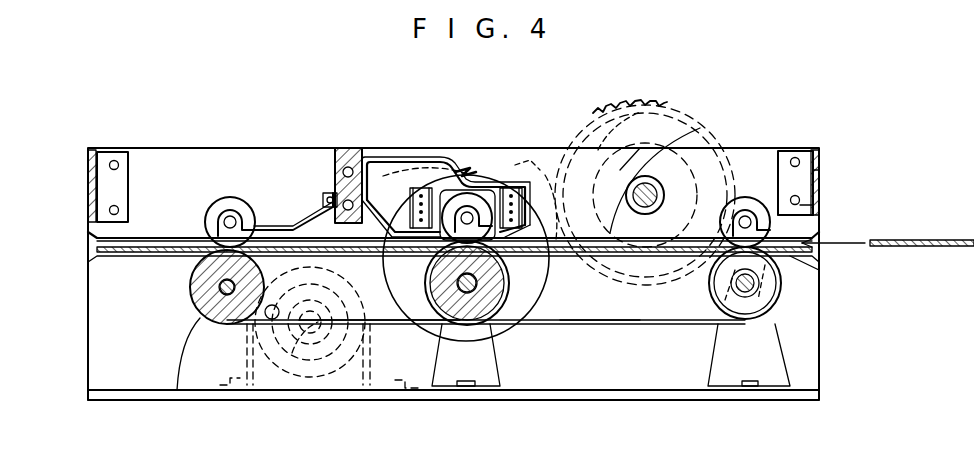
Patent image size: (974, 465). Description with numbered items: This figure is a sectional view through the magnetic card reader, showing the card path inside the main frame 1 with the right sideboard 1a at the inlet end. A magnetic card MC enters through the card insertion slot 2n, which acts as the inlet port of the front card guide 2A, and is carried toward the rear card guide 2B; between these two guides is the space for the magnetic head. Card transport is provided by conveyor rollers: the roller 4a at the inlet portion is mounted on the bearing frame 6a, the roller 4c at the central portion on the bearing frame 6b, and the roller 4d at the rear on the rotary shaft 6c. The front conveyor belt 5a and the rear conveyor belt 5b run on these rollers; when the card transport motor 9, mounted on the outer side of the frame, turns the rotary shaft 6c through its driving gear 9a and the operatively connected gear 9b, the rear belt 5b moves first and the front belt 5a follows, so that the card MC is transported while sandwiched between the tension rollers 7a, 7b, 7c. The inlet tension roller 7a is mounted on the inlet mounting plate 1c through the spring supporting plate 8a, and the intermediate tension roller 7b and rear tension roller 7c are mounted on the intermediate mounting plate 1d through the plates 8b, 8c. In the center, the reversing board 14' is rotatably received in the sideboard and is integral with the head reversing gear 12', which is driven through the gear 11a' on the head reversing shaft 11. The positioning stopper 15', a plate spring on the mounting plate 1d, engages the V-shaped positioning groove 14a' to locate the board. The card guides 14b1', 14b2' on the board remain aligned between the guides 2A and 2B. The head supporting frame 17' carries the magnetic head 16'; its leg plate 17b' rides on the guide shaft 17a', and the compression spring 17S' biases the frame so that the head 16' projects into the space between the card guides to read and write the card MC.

The main frame 1 is at (707, 398).
The right sideboard 1a is at (780, 160).
The inlet mounting plate 1c is at (820, 168).
The intermediate mounting plate 1d is at (302, 190).
The front card guide 2A is at (660, 162).
The rear card guide 2B is at (165, 237).
The card insertion slot 2n is at (817, 250).
The conveyor roller 4a is at (773, 293).
The conveyor roller 4c is at (430, 322).
The conveyor roller 4d is at (177, 390).
The front conveyor belt 5a is at (662, 324).
The rear conveyor belt 5b is at (395, 325).
The bearing frame 6a is at (777, 358).
The bearing frame 6b is at (455, 372).
The rotary shaft 6c is at (220, 290).
The inlet tension roller 7a is at (752, 197).
The intermediate tension roller 7b is at (400, 172).
The rear tension roller 7c is at (226, 197).
The spring supporting plate 8a is at (813, 160).
The spring supporting plate 8b is at (323, 200).
The spring supporting plate 8c is at (264, 226).
The card transport motor 9 is at (322, 387).
The driving gear 9a is at (292, 353).
The operatively connected gear 9b is at (272, 320).
The head reversing shaft 11 is at (662, 180).
The operatively connected gear 11a' is at (711, 152).
The head reversing gear 12' is at (535, 143).
The reversing board 14' is at (487, 300).
The vertical positioning groove 14a' is at (504, 266).
The card guide 14b1' is at (674, 114).
The card guide 14b2' is at (334, 167).
The positioning stopper 15' is at (438, 158).
The magnetic head 16' is at (600, 344).
The head supporting frame 17' is at (489, 147).
The guide shaft 17a' is at (475, 137).
The leg plate 17b' is at (626, 104).
The compression spring 17S' is at (448, 196).
The magnetic card MC is at (895, 236).